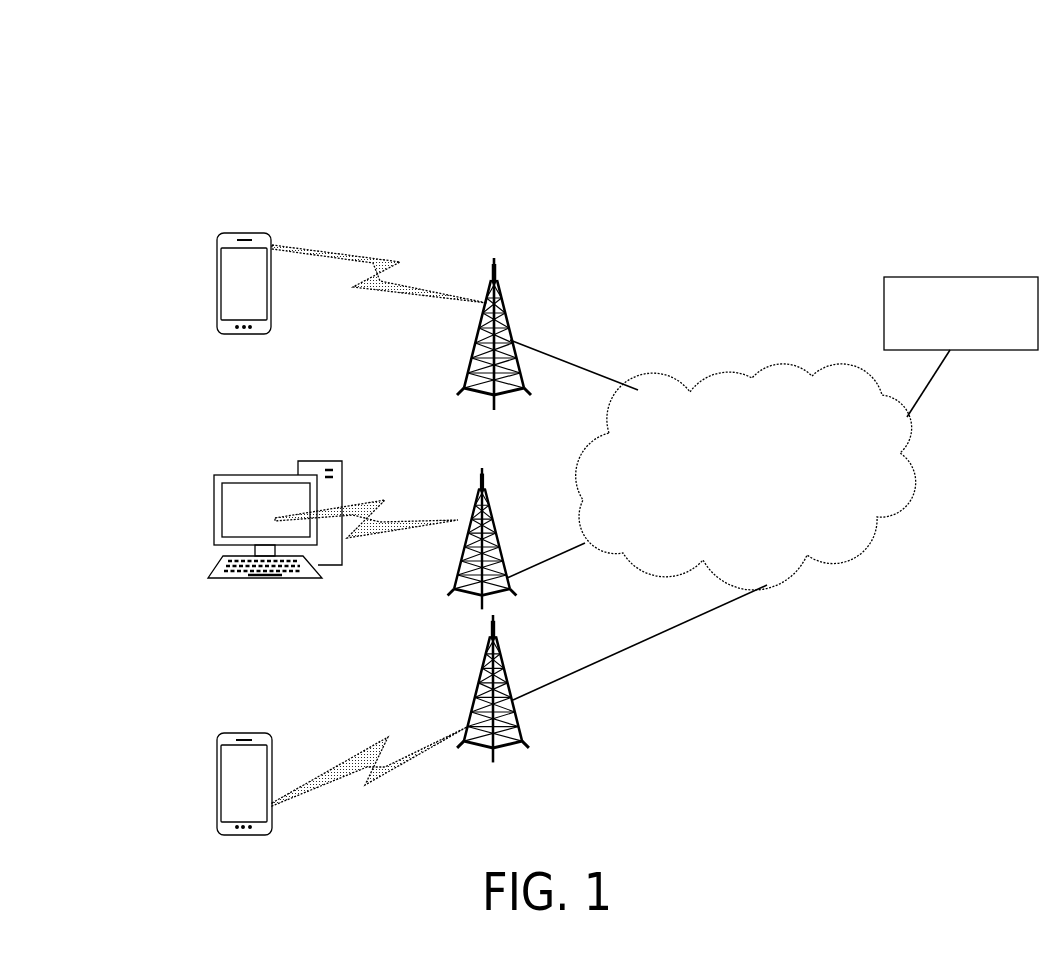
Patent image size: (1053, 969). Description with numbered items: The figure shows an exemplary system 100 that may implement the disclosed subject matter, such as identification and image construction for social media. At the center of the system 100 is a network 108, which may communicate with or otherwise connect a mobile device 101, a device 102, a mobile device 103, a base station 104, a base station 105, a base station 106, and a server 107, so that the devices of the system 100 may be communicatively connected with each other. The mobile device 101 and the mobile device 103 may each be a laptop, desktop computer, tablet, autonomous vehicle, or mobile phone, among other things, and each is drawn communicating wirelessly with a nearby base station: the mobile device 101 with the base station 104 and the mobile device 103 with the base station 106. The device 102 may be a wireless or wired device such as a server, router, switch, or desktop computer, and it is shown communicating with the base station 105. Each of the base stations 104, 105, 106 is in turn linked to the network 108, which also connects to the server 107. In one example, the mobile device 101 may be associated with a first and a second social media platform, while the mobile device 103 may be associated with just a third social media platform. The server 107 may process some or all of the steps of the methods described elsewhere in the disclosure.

The system 100 is at (252, 73).
The mobile device 101 is at (230, 333).
The device 102 is at (272, 578).
The mobile device 103 is at (272, 812).
The base station 104 is at (506, 337).
The base station 105 is at (499, 543).
The base station 106 is at (592, 762).
The server 107 is at (981, 337).
The network 108 is at (764, 489).